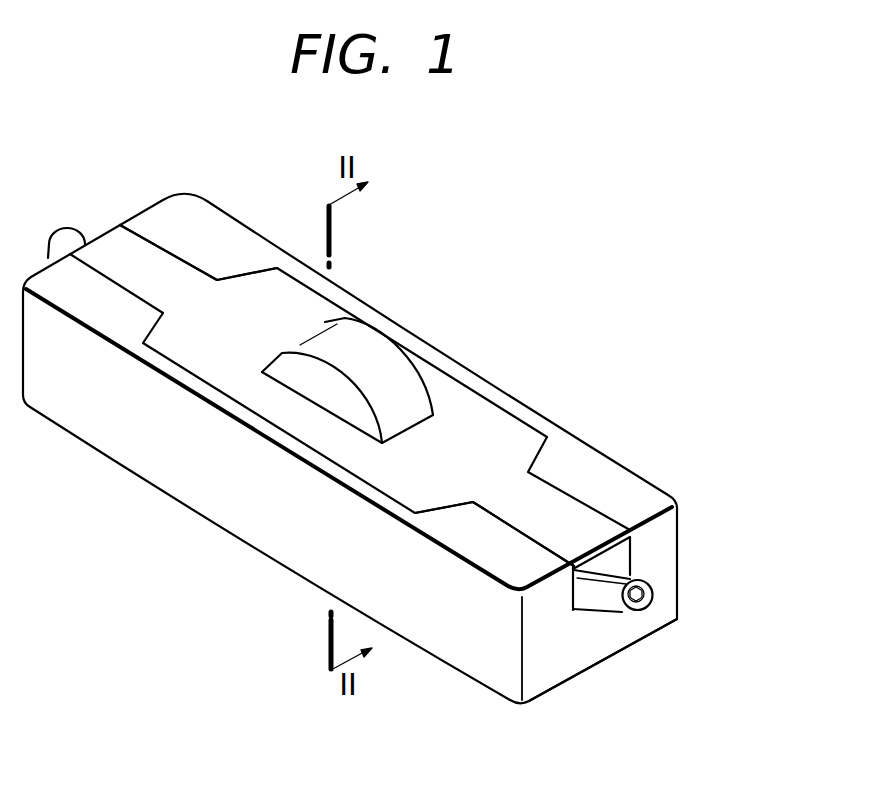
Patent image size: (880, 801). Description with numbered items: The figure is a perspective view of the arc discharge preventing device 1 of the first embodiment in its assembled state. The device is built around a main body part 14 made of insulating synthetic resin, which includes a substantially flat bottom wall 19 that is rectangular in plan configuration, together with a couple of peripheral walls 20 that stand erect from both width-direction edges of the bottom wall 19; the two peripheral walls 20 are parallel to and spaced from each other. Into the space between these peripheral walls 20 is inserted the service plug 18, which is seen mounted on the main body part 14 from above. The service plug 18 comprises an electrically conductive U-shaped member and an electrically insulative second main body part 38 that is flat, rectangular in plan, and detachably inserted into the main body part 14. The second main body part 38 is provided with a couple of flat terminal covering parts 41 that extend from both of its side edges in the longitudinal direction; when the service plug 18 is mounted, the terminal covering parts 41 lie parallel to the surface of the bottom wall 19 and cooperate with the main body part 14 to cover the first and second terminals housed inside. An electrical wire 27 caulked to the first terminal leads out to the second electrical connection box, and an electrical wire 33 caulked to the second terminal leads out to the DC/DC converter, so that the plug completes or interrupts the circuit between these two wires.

The arc discharge preventing device 1 is at (452, 270).
The main body part 14 is at (680, 530).
The service plug 18 is at (433, 392).
The bottom wall 19 is at (602, 613).
The peripheral walls 20 is at (647, 537).
The electrical wire 27 is at (77, 242).
The electrical wire 33 is at (646, 567).
The second main body part 38 is at (527, 409).
The terminal covering parts 41 is at (152, 265).